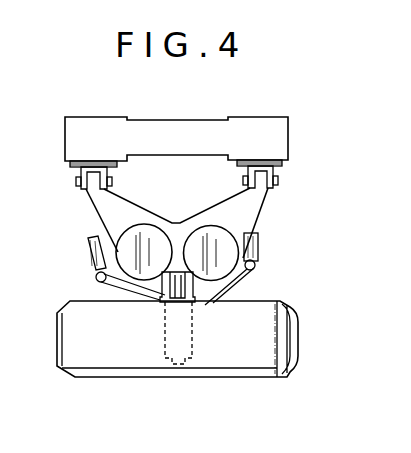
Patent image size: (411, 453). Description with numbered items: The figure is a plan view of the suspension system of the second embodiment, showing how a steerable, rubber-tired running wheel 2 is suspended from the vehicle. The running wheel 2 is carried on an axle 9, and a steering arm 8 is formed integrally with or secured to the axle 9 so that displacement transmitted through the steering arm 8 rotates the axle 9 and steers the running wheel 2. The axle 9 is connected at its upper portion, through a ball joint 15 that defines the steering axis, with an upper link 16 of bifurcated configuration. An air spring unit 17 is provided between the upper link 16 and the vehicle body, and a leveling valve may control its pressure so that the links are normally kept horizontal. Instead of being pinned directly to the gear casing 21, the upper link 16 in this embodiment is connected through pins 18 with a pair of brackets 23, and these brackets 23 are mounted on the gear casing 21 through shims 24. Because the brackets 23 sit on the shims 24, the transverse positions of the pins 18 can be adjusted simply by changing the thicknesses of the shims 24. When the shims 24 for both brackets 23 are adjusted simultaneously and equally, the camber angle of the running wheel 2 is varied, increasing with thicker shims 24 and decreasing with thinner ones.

The running wheel 2 is at (223, 355).
The steering arm 8 is at (123, 290).
The axle 9 is at (212, 292).
The ball joint 15 is at (162, 294).
The upper link 16 is at (245, 218).
The air spring unit 17 is at (241, 273).
The pin 18 is at (78, 188).
The gear casing 21 is at (245, 132).
The bracket 23 is at (77, 179).
The shim 24 is at (104, 165).